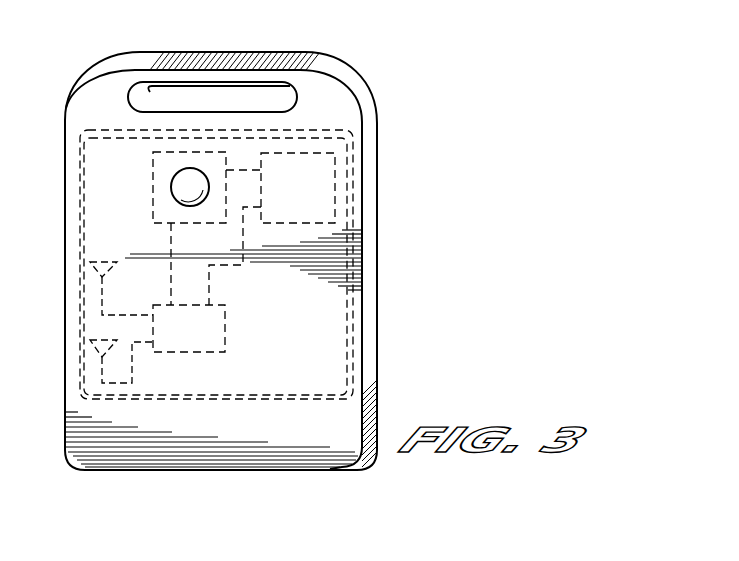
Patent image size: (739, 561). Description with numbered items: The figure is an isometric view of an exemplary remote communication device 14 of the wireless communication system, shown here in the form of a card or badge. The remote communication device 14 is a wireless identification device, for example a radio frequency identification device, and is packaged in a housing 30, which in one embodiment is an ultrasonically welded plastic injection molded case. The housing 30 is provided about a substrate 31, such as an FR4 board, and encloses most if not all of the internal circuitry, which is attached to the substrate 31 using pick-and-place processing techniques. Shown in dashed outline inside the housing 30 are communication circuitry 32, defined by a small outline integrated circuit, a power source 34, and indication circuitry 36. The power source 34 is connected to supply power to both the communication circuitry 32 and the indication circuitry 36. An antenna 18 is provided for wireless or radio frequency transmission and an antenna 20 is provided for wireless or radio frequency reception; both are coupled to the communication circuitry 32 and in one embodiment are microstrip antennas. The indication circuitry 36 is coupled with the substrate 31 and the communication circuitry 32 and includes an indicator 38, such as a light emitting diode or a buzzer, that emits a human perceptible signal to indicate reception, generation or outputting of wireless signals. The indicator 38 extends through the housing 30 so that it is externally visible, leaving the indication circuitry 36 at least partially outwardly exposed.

The remote communication device 14 is at (322, 245).
The housing 30 is at (308, 48).
The substrate 31 is at (103, 128).
The communication circuitry 32 is at (225, 330).
The power source 34 is at (335, 187).
The indication circuitry 36 is at (160, 198).
The indicator 38 is at (185, 182).
The antenna 18 is at (92, 270).
The antenna 20 is at (92, 347).